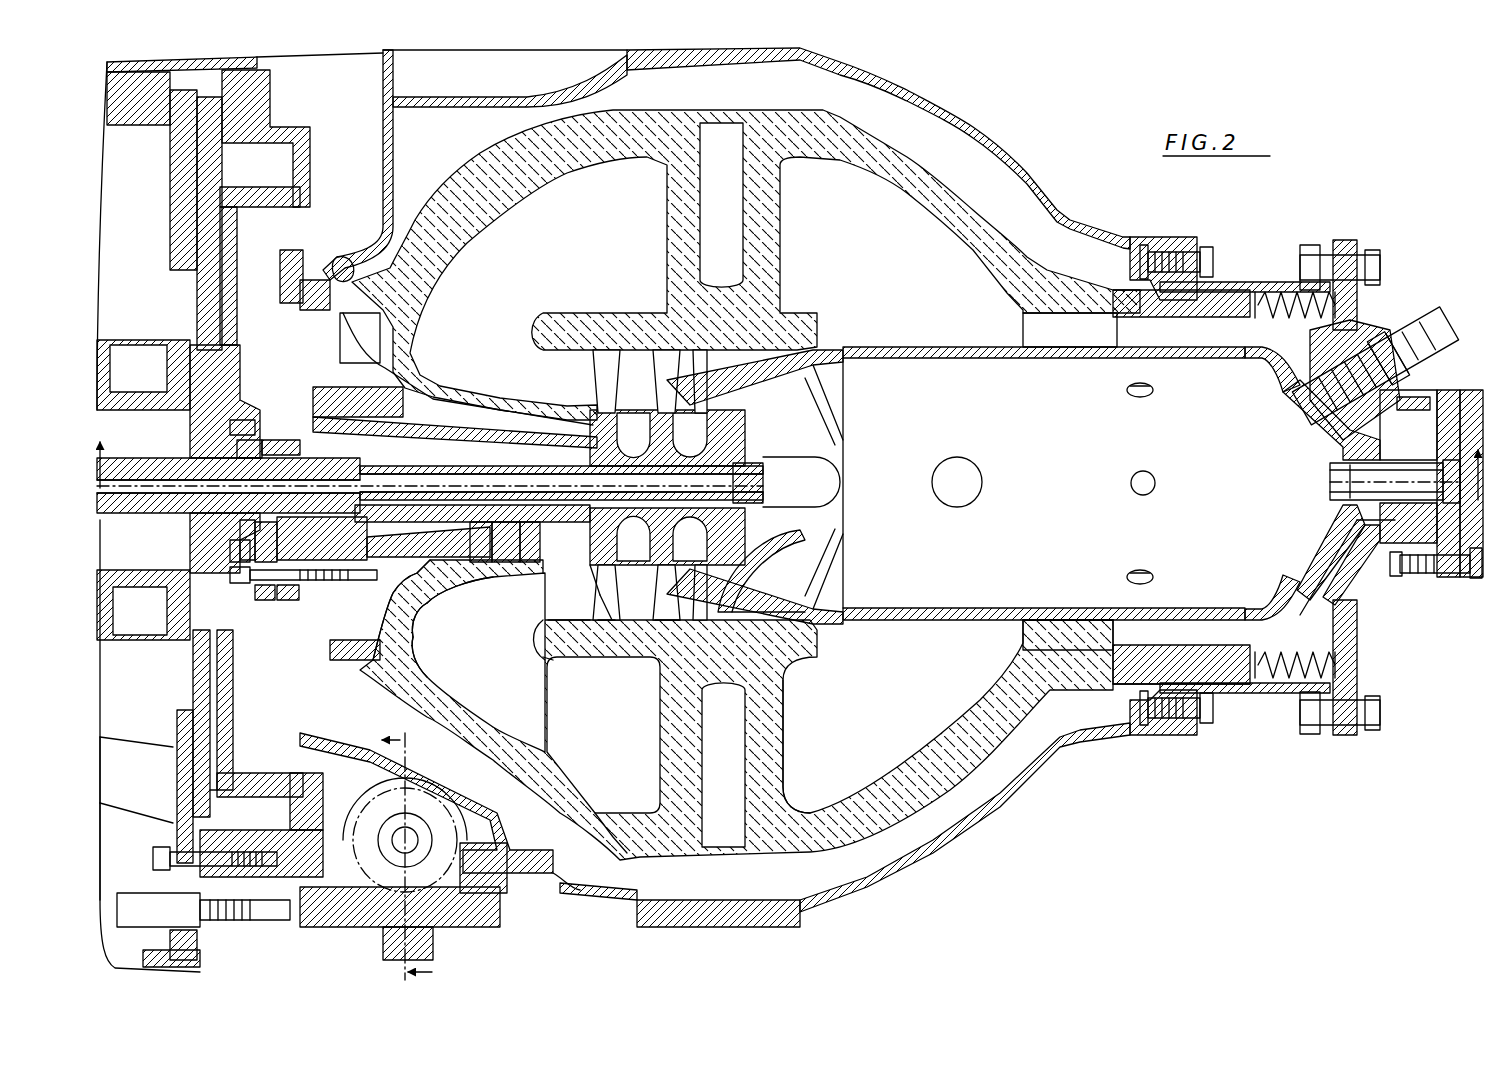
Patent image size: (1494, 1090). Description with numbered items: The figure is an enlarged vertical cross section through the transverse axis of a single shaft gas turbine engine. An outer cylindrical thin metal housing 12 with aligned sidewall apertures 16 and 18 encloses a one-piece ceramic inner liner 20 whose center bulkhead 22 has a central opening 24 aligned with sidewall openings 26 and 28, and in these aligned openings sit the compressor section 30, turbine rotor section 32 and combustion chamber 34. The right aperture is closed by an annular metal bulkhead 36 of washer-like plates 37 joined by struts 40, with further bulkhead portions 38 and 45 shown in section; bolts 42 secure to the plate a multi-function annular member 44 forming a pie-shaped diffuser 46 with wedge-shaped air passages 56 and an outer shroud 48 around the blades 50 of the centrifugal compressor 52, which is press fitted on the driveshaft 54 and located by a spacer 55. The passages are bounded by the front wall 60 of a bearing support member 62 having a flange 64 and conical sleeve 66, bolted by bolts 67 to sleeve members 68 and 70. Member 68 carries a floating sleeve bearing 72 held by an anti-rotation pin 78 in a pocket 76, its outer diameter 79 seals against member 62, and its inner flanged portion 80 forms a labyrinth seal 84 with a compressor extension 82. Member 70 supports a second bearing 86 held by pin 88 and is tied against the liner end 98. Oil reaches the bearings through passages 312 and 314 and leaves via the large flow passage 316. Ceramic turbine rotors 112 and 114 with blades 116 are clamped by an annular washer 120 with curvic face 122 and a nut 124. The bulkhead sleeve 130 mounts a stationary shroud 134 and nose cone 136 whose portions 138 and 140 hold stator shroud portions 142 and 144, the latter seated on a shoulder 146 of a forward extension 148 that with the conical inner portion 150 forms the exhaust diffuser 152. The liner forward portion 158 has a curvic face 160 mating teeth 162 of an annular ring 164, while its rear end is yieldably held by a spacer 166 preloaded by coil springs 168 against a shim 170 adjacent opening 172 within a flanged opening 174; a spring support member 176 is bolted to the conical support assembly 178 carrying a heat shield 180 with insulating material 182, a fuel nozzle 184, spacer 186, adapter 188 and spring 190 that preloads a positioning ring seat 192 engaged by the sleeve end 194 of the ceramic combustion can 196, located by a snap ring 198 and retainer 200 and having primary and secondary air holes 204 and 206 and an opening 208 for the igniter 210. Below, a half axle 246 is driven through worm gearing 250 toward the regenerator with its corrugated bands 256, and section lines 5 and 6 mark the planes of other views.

The outer cylindrical thin metal housing 12 is at (1032, 172).
The aperture 16 is at (1186, 746).
The aperture 18 is at (290, 790).
The one-piece ceramic inner liner 20 is at (885, 782).
The center partition or bulkhead 22 is at (765, 762).
The central opening 24 is at (820, 650).
The opening 26 is at (1020, 650).
The opening 28 is at (520, 578).
The compressor section 30 is at (432, 648).
The turbine rotor section 32 is at (818, 432).
The combustion can or chamber 34 is at (1066, 535).
The annular metal bulkhead 36 is at (162, 855).
The washer-like plate 37 is at (172, 212).
The housing wall 38 is at (178, 712).
The struts 40 is at (152, 820).
The bolts 42 is at (246, 921).
The multi-function annular member 44 is at (200, 240).
The housing portion 45 is at (177, 774).
The annular pie-shaped diffuser 46 is at (235, 768).
The outer annular shroud member 48 is at (150, 600).
The compressor blades 50 is at (140, 541).
The centrifugal type compressor 52 is at (202, 540).
The single engine driveshaft 54 is at (180, 500).
The spacer 55 is at (235, 447).
The wedge-shaped air passages 56 is at (272, 757).
The front wall 60 is at (222, 263).
The annular bearing support member 62 is at (268, 206).
The flange portion 64 is at (256, 188).
The conical sleeve portion 66 is at (422, 596).
The bolts 67 is at (346, 582).
The bearing support sleeve member 68 is at (326, 530).
The bearing support sleeve member 70 is at (395, 548).
The floating oil type sleeve bearing 72 is at (275, 532).
The vertical pocket 76 is at (285, 601).
The bearing anti-rotation pin 78 is at (274, 584).
The outer diameter 79 is at (266, 601).
The inner flanged portion 80 is at (230, 545).
The extension 82 is at (222, 430).
The labyrinth seal 84 is at (256, 427).
The floating oil type bearing 86 is at (440, 602).
The bearing anti-rotation pin 88 is at (483, 565).
The end of inner liner 98 is at (530, 565).
The turbine rotor 112 is at (667, 438).
The turbine rotor 114 is at (667, 536).
The rotor blades 116 is at (590, 580).
The annular washer 120 is at (694, 435).
The curvic coupling face 122 is at (694, 539).
The nut 124 is at (786, 482).
The transverse sleeve portion 130 is at (745, 598).
The outer stationary shroud 134 is at (594, 356).
The annular inlet nose cone 136 is at (852, 479).
The shroud portion 138 is at (656, 622).
The end shroud portion 140 is at (606, 622).
The annular stator blade shroud portion 142 is at (760, 572).
The annular stator blade shroud portion 144 is at (625, 587).
The shoulder 146 is at (615, 606).
The forward extension 148 is at (570, 622).
The radially inner portion 150 is at (420, 614).
The exhaust gas diffuser section 152 is at (746, 265).
The forwardmost portion of inner liner 158 is at (380, 700).
The curvic coupling face 160 is at (363, 264).
The teeth 162 is at (426, 793).
The annular ring 164 is at (300, 305).
The annular spacer 166 is at (1160, 660).
The coil spring units 168 is at (1278, 622).
The shim 170 is at (1262, 681).
The opening 172 is at (1110, 641).
The flanged opening 174 is at (1192, 720).
The annular spring support member 176 is at (1302, 726).
The conical combustion can support assembly 178 is at (1358, 632).
The conical heat shield 180 is at (1335, 572).
The insulating material 182 is at (1362, 602).
The fuel nozzle member 184 is at (1330, 480).
The spacer 186 is at (1452, 582).
The adapter 188 is at (1428, 580).
The spring 190 is at (1382, 481).
The conical positioning ring seat 192 is at (1420, 430).
The sleeve end 194 is at (1312, 464).
The ceramic one-piece combustion can 196 is at (1232, 360).
The snap ring 198 is at (1340, 510).
The retainer 200 is at (1370, 513).
The primary air holes 204 is at (1152, 478).
The secondary air holes 206 is at (968, 468).
The opening 208 is at (1300, 376).
The spark plug or igniter 210 is at (1340, 420).
The half axle 246 is at (272, 836).
The worm gearing 250 is at (520, 935).
The corrugated annular ceramic bands 256 is at (378, 820).
The oil passage 312 is at (292, 450).
The oil passage 314 is at (465, 444).
The large flow passage 316 is at (370, 213).
The section line 5 is at (789, 457).
The section line 6 is at (417, 850).